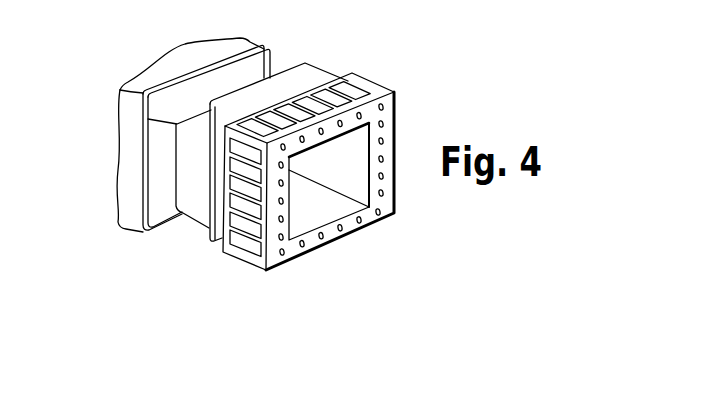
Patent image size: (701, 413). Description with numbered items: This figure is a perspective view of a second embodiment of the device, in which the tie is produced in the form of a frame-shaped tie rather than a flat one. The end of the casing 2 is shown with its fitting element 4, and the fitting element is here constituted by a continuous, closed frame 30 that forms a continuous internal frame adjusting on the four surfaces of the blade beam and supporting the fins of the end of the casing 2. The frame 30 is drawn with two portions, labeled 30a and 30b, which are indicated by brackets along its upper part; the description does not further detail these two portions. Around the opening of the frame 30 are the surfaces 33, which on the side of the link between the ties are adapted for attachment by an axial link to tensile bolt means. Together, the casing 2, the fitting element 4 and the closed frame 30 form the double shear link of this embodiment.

The casing 2 is at (133, 193).
The fitting element 4 is at (282, 82).
The frame 30 is at (265, 169).
The first connector portion 30a is at (351, 69).
The second connector portion 30b is at (402, 86).
The surfaces 33 is at (331, 234).